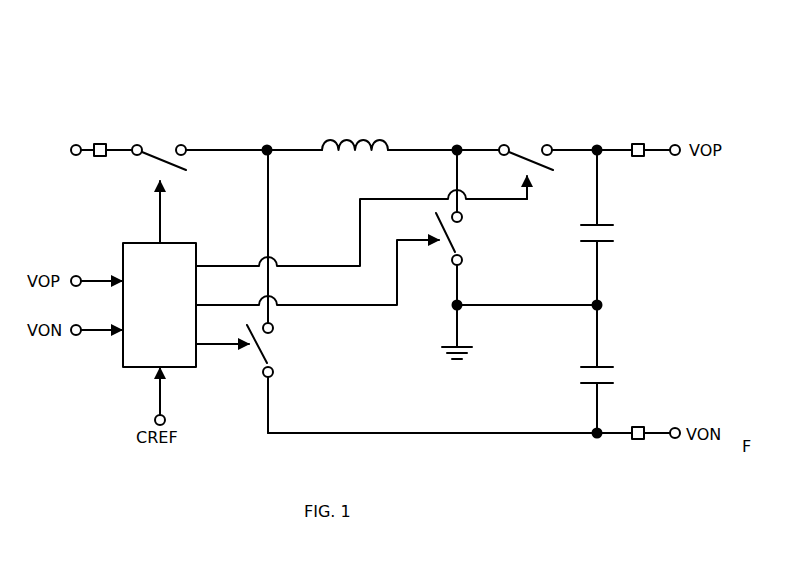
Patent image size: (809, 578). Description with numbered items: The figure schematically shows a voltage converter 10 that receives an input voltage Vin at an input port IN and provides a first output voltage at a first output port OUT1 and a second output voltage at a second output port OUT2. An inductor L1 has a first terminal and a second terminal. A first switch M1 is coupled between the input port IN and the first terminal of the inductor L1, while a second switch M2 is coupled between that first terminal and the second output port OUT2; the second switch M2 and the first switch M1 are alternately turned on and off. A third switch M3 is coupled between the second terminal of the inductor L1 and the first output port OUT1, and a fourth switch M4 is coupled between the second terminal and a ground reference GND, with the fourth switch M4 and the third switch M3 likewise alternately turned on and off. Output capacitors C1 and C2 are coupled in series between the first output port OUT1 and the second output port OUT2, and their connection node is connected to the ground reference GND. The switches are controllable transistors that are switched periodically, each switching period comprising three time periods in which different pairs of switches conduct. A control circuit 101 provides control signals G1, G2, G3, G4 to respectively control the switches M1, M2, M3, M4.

The voltage converter 10 is at (380, 50).
The control circuit 101 is at (159, 305).
The first switch M1 is at (199, 180).
The second switch M2 is at (422, 291).
The third switch M3 is at (527, 154).
The fourth switch M4 is at (467, 227).
The inductor L1 is at (362, 133).
The output capacitor C1 is at (611, 227).
The output capacitor C2 is at (611, 369).
The input port IN is at (112, 139).
The first output port OUT1 is at (633, 137).
The second output port OUT2 is at (633, 422).
The control signal G1 is at (141, 226).
The control signal G2 is at (222, 332).
The control signal G3 is at (361, 228).
The control signal G4 is at (317, 272).
The ground reference GND is at (457, 347).
The input voltage Vin is at (65, 150).